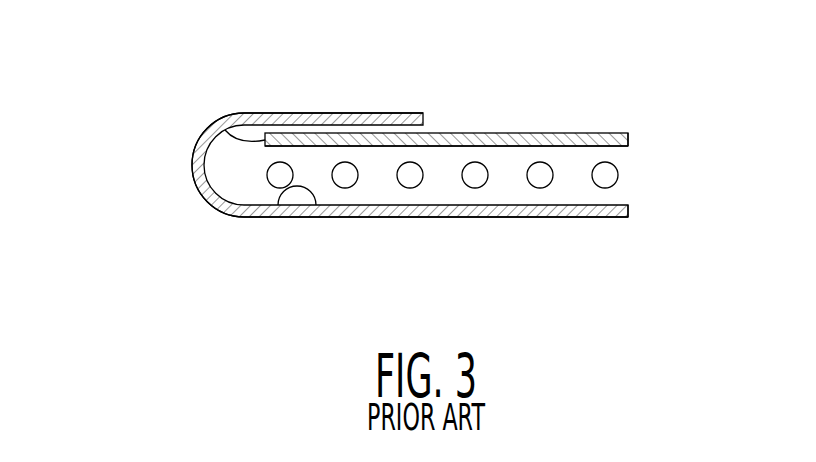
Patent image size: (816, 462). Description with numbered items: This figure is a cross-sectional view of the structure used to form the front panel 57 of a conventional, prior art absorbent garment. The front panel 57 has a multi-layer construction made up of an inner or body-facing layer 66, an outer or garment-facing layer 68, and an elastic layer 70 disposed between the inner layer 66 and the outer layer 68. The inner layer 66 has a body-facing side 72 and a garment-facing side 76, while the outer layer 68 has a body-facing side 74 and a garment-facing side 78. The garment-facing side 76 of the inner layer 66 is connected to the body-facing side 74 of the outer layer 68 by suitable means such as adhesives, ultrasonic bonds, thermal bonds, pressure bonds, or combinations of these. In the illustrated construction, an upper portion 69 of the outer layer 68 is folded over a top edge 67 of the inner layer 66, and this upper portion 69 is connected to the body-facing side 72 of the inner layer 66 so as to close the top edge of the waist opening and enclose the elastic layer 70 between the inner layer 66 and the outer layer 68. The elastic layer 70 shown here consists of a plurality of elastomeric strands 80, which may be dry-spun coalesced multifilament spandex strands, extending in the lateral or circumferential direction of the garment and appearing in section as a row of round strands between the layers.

The front panel 57 is at (158, 164).
The inner layer 66 is at (628, 133).
The top edge 67 is at (216, 128).
The outer layer 68 is at (630, 210).
The upper portion 69 is at (307, 112).
The elastic layer 70 is at (630, 168).
The body-facing side 72 is at (467, 133).
The body-facing side 74 is at (278, 205).
The garment-facing side 76 is at (492, 147).
The garment-facing side 78 is at (533, 217).
The elastomeric strands 80 is at (527, 183).